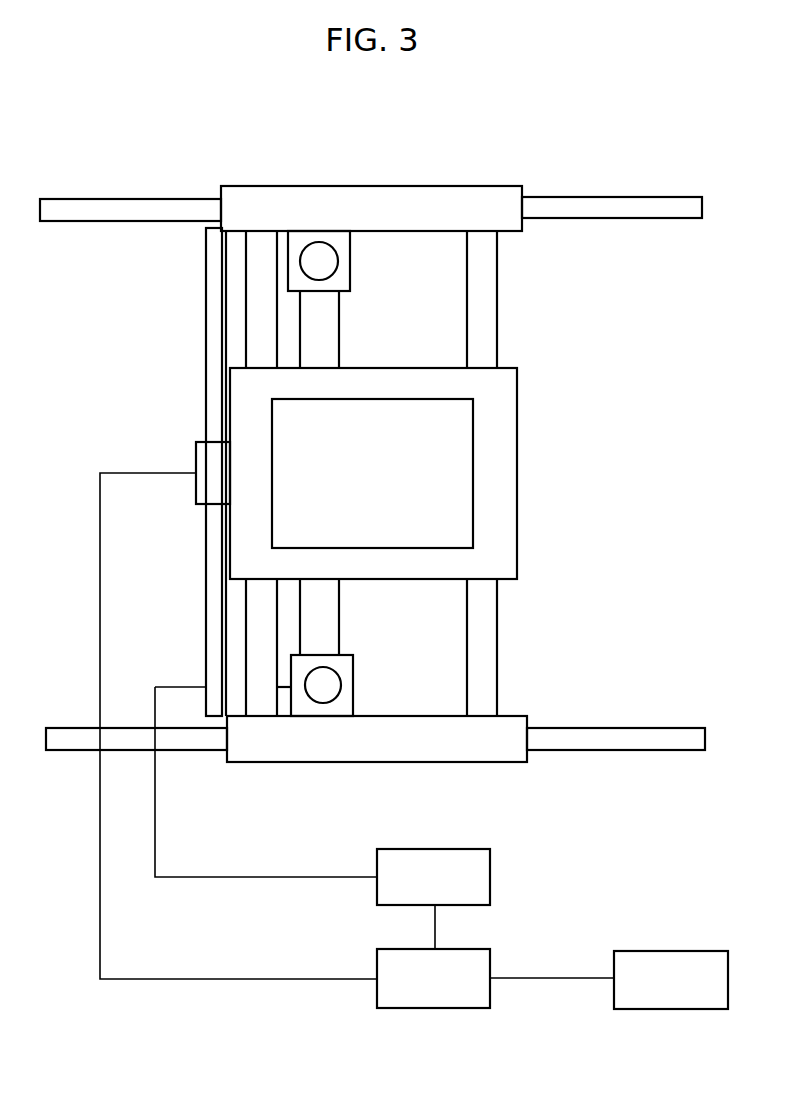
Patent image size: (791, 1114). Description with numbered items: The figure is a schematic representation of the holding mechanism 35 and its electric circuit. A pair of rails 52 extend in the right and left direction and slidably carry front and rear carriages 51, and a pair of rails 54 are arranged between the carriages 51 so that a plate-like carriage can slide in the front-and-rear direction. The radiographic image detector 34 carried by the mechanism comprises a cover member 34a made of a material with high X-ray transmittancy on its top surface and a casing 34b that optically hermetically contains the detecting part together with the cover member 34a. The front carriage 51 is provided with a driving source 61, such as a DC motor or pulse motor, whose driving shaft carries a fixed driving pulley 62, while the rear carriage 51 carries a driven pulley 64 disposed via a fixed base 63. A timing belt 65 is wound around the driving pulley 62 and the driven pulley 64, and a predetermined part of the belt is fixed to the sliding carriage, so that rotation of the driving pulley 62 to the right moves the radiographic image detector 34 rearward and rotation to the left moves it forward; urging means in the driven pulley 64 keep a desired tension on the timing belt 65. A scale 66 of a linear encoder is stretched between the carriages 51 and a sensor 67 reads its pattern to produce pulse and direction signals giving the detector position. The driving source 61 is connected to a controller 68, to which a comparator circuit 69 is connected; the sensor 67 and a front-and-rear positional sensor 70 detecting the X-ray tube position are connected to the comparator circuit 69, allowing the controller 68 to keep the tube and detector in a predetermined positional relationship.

The radiographic image detector 34 is at (414, 473).
The cover member 34a is at (438, 477).
The casing 34b is at (498, 544).
The holding mechanism 35 is at (572, 190).
The carriage 51 is at (487, 206).
The rail 52 is at (655, 206).
The rail 54 is at (492, 298).
The driving source 61 is at (308, 711).
The driving pulley 62 is at (328, 688).
The fixed base 63 is at (352, 231).
The driven pulley 64 is at (311, 252).
The timing belt 65 is at (299, 326).
The scale 66 is at (210, 262).
The sensor 67 is at (205, 462).
The controller 68 is at (428, 852).
The comparator circuit 69 is at (451, 1009).
The front-and-rear positional sensor 70 is at (685, 1010).